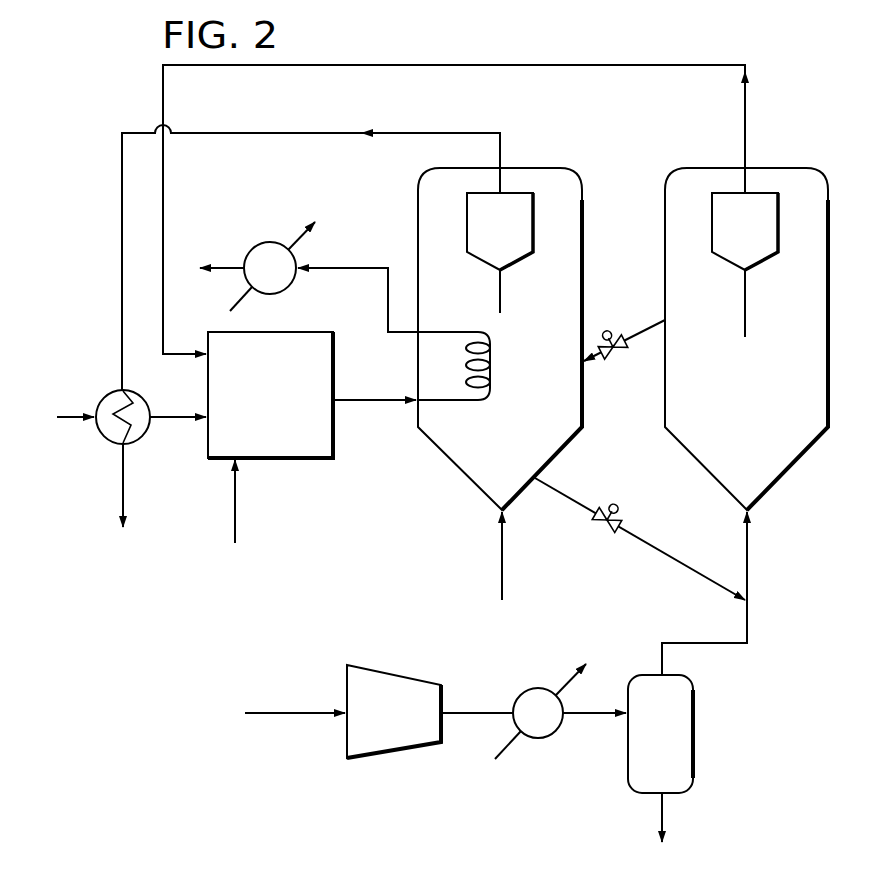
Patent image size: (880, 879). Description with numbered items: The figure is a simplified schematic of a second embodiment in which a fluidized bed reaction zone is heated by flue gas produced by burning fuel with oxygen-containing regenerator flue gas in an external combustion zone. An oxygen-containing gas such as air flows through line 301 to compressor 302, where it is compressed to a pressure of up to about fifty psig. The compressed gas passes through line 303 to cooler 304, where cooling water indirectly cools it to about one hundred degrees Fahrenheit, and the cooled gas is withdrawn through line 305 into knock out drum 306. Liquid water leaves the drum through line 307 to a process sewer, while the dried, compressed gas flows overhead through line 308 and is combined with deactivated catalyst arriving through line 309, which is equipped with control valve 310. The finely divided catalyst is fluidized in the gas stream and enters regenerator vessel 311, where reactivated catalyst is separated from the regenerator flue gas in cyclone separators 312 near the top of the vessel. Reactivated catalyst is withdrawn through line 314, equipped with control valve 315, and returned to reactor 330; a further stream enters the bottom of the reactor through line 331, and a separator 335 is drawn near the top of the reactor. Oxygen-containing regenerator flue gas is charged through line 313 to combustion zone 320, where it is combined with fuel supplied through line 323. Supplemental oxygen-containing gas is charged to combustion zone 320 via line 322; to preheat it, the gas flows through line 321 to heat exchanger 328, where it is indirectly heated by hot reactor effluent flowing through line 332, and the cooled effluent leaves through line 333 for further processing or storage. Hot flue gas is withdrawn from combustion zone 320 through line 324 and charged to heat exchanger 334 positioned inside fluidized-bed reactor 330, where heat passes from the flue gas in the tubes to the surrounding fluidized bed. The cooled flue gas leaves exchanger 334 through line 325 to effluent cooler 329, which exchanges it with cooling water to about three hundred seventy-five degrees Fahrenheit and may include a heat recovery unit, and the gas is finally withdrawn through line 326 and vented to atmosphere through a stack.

The line 301 is at (300, 711).
The compressor 302 is at (409, 725).
The line 303 is at (503, 710).
The cooler 304 is at (559, 725).
The line 305 is at (580, 717).
The knock out drum 306 is at (680, 725).
The line 307 is at (665, 814).
The line 308 is at (750, 623).
The line 309 is at (648, 565).
The control valve 310 is at (597, 530).
The regenerator vessel 311 is at (764, 438).
The cyclone separators 312 is at (764, 242).
The line 313 is at (749, 113).
The line 314 is at (598, 366).
The control valve 315 is at (616, 352).
The combustion zone 320 is at (291, 405).
The line 321 is at (84, 412).
The line 322 is at (165, 412).
The line 323 is at (237, 520).
The line 324 is at (350, 402).
The line 325 is at (330, 270).
The line 326 is at (212, 278).
The heat exchanger 328 is at (105, 441).
The effluent cooler 329 is at (291, 280).
The fluidized-bed reactor 330 is at (521, 453).
The stripping gas inlet line 331 is at (505, 558).
The line 332 is at (503, 145).
The line 333 is at (126, 495).
The heat exchanger 334 is at (491, 351).
The stripper internal separator 335 is at (521, 242).